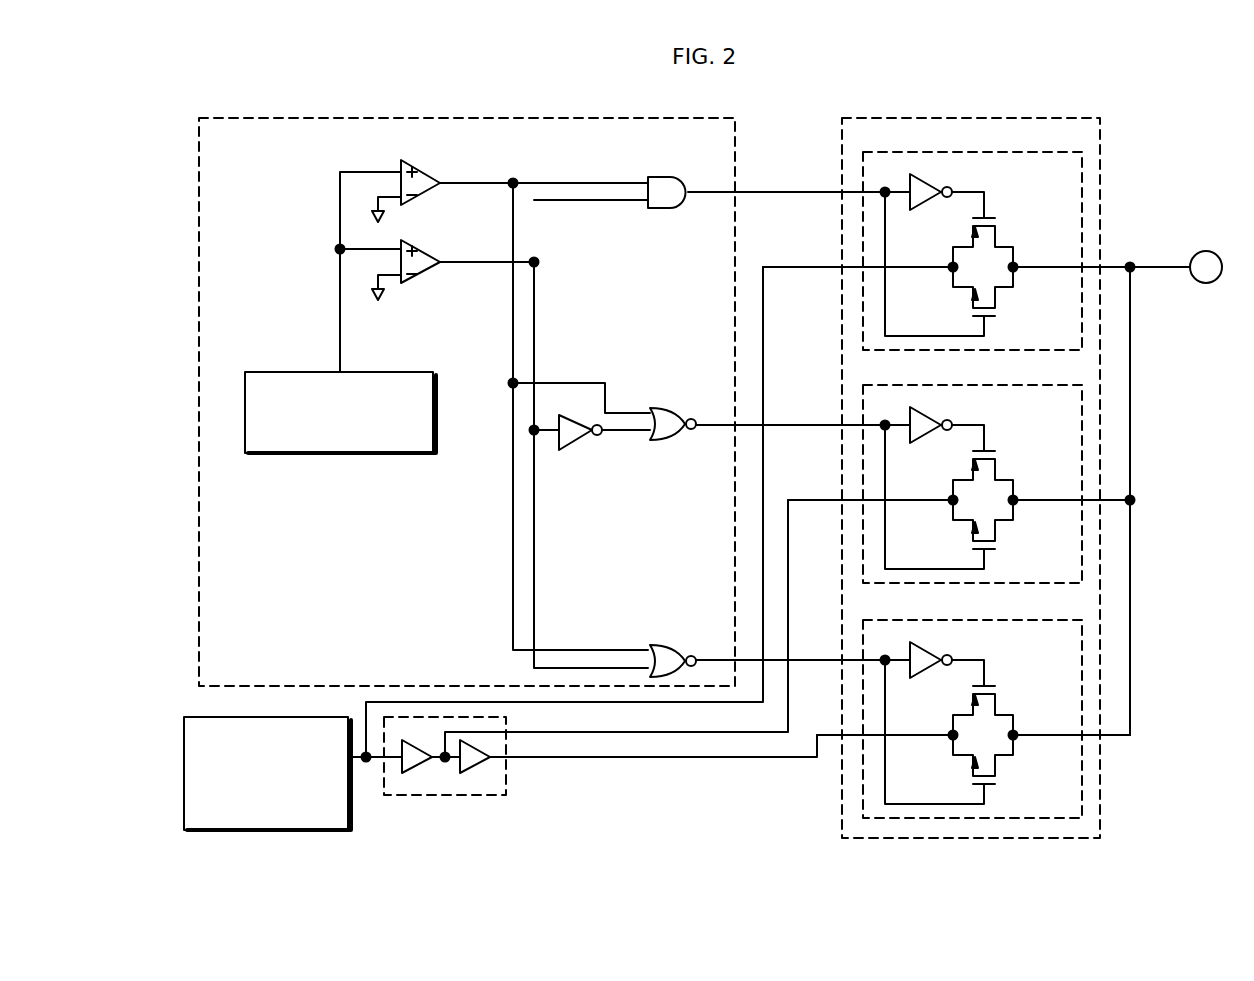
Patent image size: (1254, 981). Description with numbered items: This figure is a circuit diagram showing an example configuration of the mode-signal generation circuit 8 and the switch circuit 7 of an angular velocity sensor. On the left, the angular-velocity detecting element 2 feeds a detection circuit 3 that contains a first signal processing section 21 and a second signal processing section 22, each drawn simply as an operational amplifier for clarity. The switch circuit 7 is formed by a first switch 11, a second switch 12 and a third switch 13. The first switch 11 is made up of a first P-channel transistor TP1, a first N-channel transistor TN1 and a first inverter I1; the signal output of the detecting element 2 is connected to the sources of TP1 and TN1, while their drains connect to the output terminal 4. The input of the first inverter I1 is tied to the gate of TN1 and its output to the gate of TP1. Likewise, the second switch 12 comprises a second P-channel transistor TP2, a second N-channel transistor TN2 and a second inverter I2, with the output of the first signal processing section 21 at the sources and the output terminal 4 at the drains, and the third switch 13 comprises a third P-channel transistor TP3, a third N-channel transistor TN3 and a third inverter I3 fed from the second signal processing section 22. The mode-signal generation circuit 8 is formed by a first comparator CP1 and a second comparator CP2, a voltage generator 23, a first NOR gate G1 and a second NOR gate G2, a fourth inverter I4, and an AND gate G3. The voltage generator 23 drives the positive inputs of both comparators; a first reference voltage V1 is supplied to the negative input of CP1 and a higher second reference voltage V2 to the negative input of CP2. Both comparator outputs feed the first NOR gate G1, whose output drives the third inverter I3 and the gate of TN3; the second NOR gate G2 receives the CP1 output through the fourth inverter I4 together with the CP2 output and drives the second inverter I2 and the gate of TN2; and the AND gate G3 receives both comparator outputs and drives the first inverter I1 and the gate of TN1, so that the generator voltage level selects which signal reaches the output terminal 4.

The angular-velocity detecting element 2 is at (264, 832).
The detection circuit 3 is at (506, 794).
The output terminal 4 is at (1212, 253).
The switch circuit 7 is at (1038, 118).
The mode-signal generation circuit 8 is at (666, 118).
The first switch 11 is at (1026, 152).
The second switch 12 is at (1026, 385).
The third switch 13 is at (1026, 620).
The first signal processing section 21 is at (422, 788).
The second signal processing section 22 is at (480, 788).
The voltage generator 23 is at (364, 372).
The first comparator CP1 is at (422, 252).
The second comparator CP2 is at (422, 170).
The first reference voltage V1 is at (386, 297).
The second reference voltage V2 is at (386, 218).
The first NOR gate G1 is at (661, 643).
The second NOR gate G2 is at (661, 406).
The AND gate G3 is at (661, 174).
The first inverter I1 is at (926, 176).
The second inverter I2 is at (926, 409).
The third inverter I3 is at (926, 644).
The fourth inverter I4 is at (578, 444).
The first P-channel transistor TP1 is at (989, 211).
The second P-channel transistor TP2 is at (989, 444).
The third P-channel transistor TP3 is at (989, 679).
The first N-channel transistor TN1 is at (989, 326).
The second N-channel transistor TN2 is at (989, 559).
The third N-channel transistor TN3 is at (989, 794).